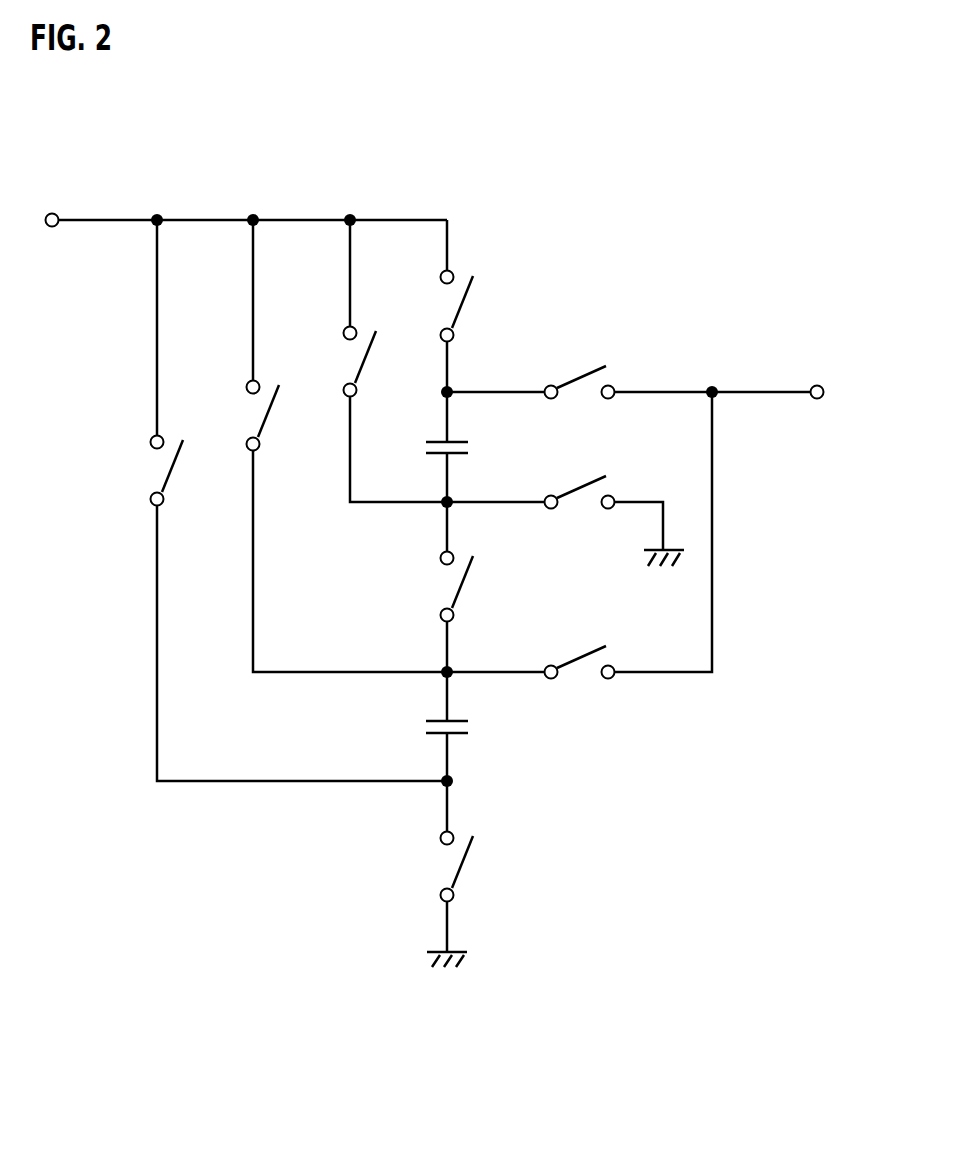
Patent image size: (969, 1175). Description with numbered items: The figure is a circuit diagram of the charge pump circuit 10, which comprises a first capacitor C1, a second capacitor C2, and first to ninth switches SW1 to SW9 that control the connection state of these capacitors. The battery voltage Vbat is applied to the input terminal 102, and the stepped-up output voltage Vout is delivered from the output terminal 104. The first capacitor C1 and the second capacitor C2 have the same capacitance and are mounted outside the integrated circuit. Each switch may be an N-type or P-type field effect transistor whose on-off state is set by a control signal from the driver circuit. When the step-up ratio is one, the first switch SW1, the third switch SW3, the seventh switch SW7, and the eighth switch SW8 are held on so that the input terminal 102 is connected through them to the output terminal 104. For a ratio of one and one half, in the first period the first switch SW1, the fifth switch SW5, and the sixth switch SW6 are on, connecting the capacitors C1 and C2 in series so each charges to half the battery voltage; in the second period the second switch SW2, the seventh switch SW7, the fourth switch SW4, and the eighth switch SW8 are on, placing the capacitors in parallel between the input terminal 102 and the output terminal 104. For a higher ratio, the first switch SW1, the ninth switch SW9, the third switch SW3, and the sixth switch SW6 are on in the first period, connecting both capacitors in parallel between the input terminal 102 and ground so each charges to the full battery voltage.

The charge pump circuit 10 is at (457, 1050).
The input terminal 102 is at (55, 213).
The output terminal 104 is at (820, 386).
The first switch SW1 is at (426, 306).
The second switch SW2 is at (329, 362).
The third switch SW3 is at (233, 416).
The fourth switch SW4 is at (136, 471).
The fifth switch SW5 is at (426, 587).
The sixth switch SW6 is at (426, 867).
The seventh switch SW7 is at (580, 360).
The eighth switch SW8 is at (580, 641).
The ninth switch SW9 is at (580, 470).
The first capacitor C1 is at (467, 450).
The second capacitor C2 is at (468, 730).